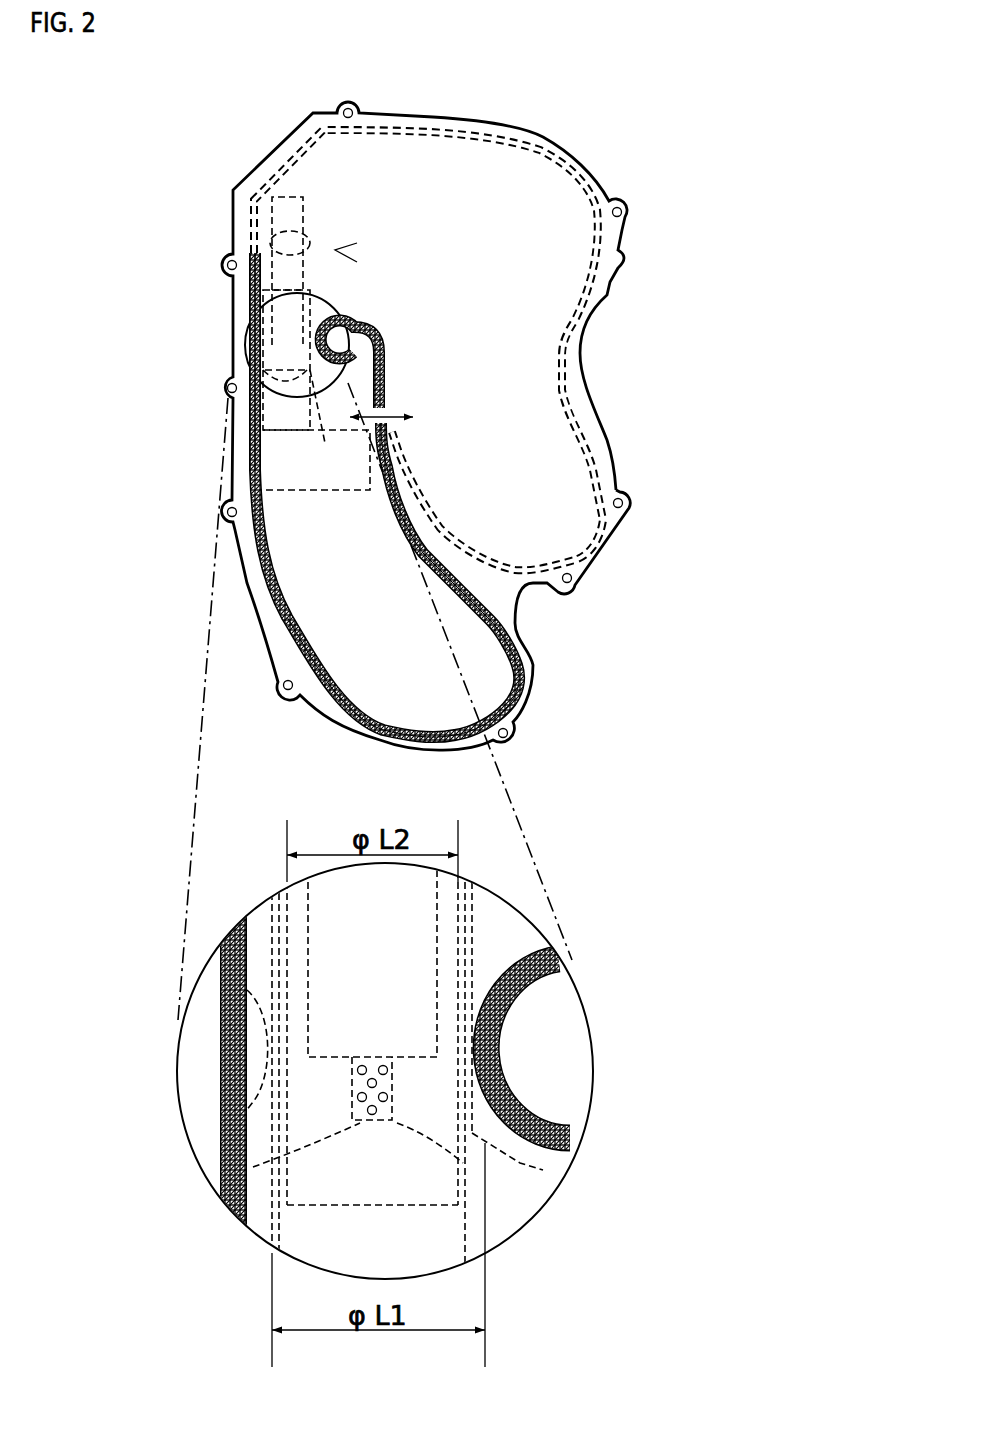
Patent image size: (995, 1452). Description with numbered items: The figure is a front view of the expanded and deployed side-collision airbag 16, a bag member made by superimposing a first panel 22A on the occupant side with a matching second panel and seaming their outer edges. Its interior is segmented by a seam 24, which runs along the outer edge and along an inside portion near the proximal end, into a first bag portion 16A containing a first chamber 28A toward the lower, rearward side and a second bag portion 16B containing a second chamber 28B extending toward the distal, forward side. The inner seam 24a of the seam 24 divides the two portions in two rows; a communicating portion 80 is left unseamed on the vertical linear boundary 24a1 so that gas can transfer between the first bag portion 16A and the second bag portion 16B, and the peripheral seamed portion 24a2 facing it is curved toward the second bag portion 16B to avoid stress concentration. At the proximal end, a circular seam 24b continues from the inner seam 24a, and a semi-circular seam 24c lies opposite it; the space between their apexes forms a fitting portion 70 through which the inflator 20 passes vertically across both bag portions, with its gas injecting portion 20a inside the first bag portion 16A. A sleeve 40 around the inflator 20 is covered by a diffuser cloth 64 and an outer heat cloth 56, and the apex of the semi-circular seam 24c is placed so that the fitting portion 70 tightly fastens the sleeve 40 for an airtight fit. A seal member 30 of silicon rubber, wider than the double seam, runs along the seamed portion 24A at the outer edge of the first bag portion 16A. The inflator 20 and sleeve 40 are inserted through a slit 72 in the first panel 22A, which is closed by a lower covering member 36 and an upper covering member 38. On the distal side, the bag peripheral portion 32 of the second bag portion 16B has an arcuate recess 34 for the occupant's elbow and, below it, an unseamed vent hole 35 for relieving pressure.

The side-collision airbag 16 is at (494, 424).
The first bag portion 16A is at (495, 675).
The second bag portion 16B is at (560, 210).
The inflator 20 is at (283, 215).
The gas injecting portion 20a is at (223, 393).
The first panel 22A is at (317, 167).
The seam 24 is at (537, 157).
The inner seam 24a is at (433, 533).
The linear boundary 24a1 is at (373, 460).
The peripheral seamed portion 24a2 is at (387, 402).
The seamed portion 24A is at (510, 640).
The circular seam 24b is at (350, 317).
The semi-circular seam 24c is at (245, 330).
The first chamber 28A is at (343, 667).
The second chamber 28B is at (467, 180).
The seal member 30 is at (277, 620).
The bag peripheral portion 32 is at (627, 255).
The recess 34 is at (580, 350).
The vent hole 35 is at (607, 540).
The covering member 36 is at (262, 240).
The covering member 38 is at (335, 250).
The sleeve 40 is at (247, 420).
The heat cloth 56 is at (227, 520).
The diffuser cloth 64 is at (247, 467).
The fitting portion 70 is at (308, 405).
The slit 72 is at (293, 232).
The communicating portion 80 is at (415, 418).